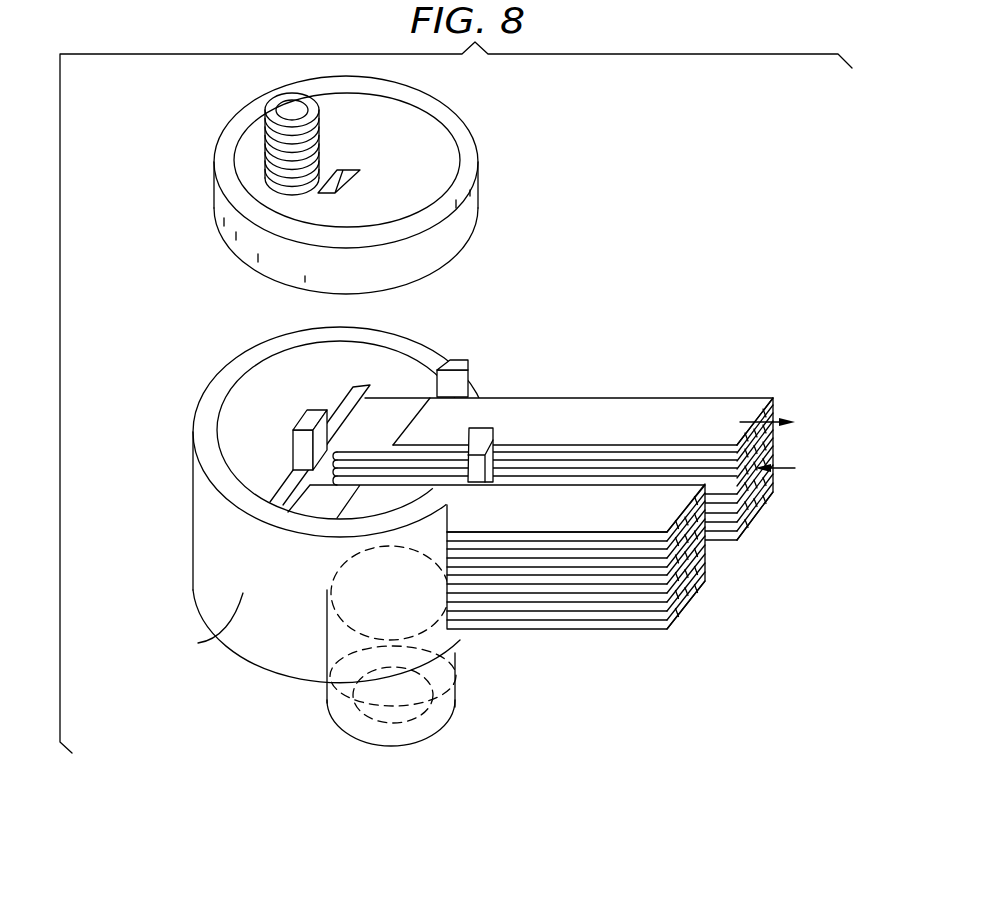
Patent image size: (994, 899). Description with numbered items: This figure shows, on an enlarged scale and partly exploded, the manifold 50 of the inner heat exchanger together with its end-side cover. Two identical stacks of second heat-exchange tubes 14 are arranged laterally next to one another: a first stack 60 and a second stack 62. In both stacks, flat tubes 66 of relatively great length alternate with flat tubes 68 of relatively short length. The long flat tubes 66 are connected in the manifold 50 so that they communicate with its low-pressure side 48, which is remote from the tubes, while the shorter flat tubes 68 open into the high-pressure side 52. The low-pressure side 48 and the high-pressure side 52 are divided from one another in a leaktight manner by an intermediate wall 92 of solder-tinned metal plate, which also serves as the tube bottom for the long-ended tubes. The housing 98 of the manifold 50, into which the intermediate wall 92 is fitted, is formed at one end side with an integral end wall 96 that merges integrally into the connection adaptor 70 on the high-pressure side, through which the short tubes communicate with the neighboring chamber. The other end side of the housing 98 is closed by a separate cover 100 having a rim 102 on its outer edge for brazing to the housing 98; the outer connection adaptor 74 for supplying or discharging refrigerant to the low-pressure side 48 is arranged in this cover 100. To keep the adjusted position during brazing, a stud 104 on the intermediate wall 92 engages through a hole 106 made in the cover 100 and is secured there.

The second heat-exchange tubes 14 is at (739, 377).
The low-pressure side 48 is at (238, 429).
The manifold 50 is at (215, 538).
The high-pressure side 52 is at (410, 381).
The first stack 60 is at (643, 523).
The second stack 62 is at (709, 436).
The flat tubes of relatively great length 66 is at (388, 433).
The flat tubes of relatively short length 68 is at (581, 436).
The connection adaptor 70 is at (440, 710).
The outer connection adaptor 74 is at (265, 127).
The intermediate wall 92 is at (352, 398).
The end wall 96 is at (278, 693).
The housing 98 is at (210, 628).
The cover 100 is at (443, 155).
The rim 102 is at (447, 242).
The stud 104 is at (300, 418).
The hole 106 is at (353, 170).